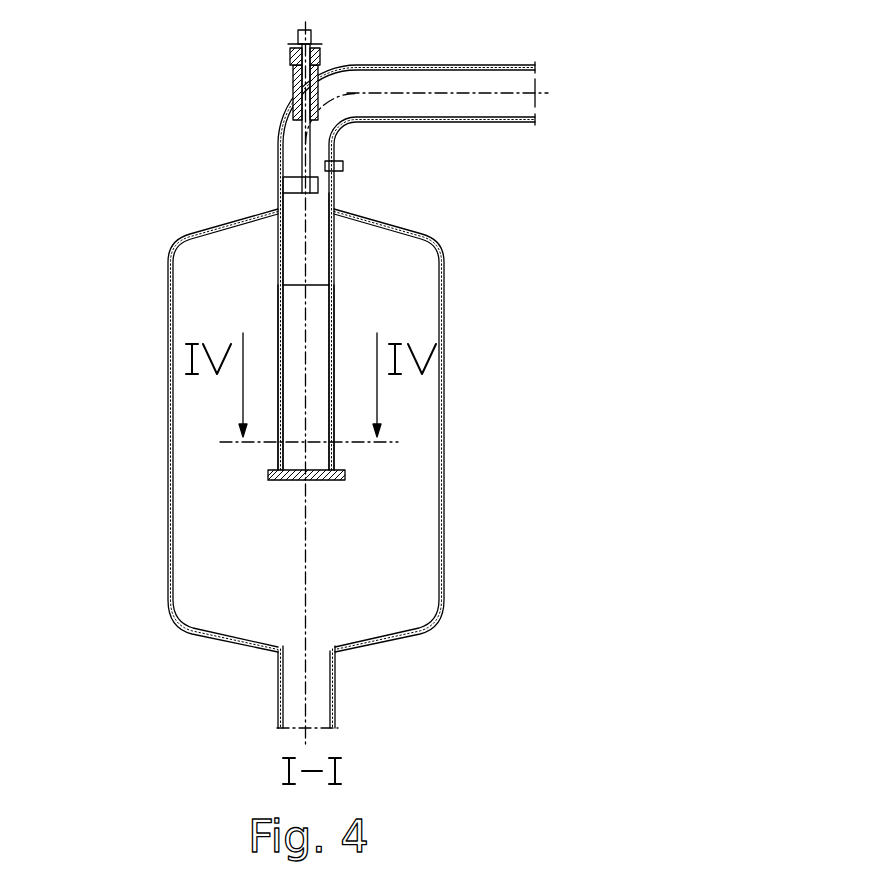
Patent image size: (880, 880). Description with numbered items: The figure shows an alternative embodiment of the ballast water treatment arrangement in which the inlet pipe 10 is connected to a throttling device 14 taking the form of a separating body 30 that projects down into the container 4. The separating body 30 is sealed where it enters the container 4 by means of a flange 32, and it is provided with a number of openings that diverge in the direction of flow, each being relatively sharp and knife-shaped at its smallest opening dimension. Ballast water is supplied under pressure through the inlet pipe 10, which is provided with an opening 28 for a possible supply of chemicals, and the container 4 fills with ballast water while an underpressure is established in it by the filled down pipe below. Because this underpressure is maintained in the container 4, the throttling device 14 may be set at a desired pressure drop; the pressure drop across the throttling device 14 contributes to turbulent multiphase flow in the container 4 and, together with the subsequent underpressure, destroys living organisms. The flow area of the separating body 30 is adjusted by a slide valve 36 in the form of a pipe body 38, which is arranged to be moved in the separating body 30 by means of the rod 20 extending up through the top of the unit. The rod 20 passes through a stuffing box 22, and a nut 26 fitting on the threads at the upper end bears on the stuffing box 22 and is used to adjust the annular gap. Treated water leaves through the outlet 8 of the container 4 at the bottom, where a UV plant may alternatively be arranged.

The container 4 is at (445, 325).
The outlet 8 is at (335, 687).
The inlet pipe 10 is at (438, 66).
The throttling device 14 is at (265, 287).
The rod 20 is at (302, 138).
The stuffing box 22 is at (293, 92).
The nut 26 is at (290, 55).
The opening 28 is at (343, 167).
The separating body 30 is at (277, 340).
The flange 32 is at (290, 480).
The slide valve 36 is at (283, 184).
The pipe body 38 is at (284, 229).